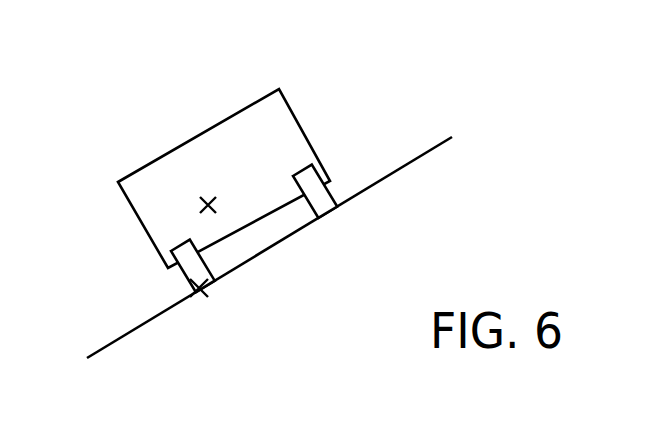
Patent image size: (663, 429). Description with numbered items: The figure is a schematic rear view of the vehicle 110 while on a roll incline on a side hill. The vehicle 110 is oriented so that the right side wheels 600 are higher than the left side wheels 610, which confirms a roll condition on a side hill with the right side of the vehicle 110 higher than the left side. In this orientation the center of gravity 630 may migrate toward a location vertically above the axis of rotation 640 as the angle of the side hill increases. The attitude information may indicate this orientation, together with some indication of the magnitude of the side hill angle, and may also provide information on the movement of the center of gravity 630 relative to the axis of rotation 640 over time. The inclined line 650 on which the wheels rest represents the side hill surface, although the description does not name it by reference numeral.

The vehicle 110 is at (224, 165).
The right side wheels 600 is at (385, 152).
The left side wheels 610 is at (131, 279).
The center of gravity 630 is at (140, 172).
The axis of rotation 640 is at (240, 302).
The inclined ground surface 650 is at (302, 247).